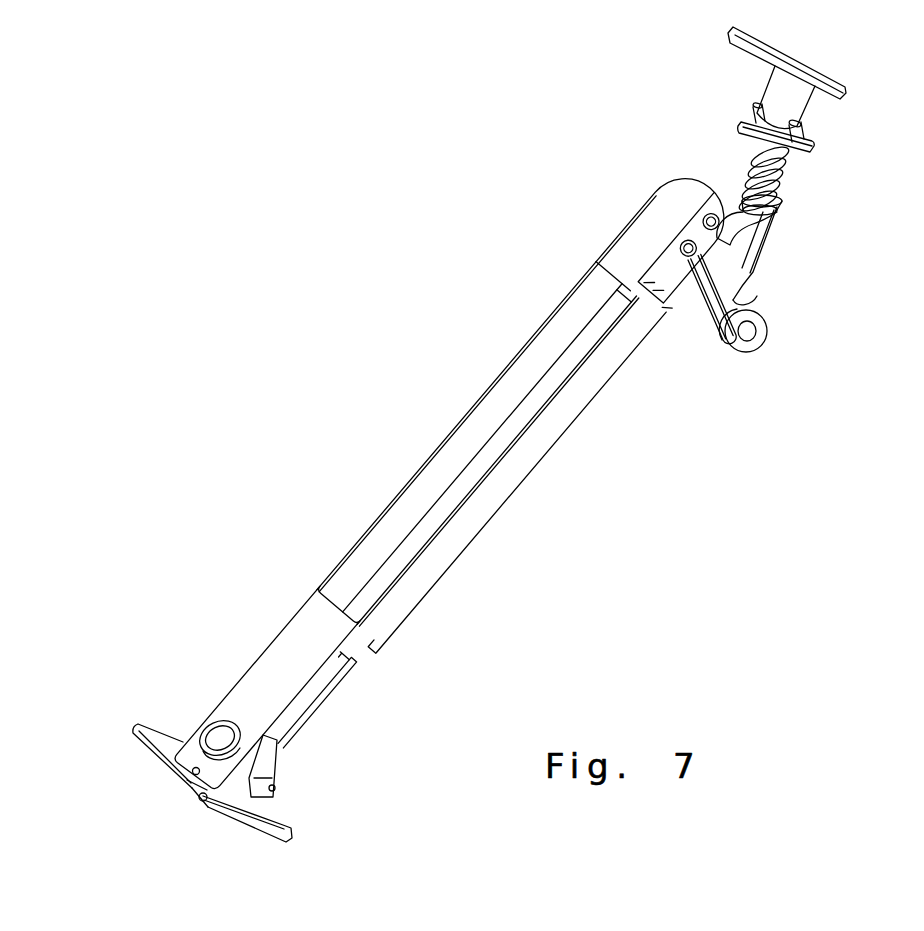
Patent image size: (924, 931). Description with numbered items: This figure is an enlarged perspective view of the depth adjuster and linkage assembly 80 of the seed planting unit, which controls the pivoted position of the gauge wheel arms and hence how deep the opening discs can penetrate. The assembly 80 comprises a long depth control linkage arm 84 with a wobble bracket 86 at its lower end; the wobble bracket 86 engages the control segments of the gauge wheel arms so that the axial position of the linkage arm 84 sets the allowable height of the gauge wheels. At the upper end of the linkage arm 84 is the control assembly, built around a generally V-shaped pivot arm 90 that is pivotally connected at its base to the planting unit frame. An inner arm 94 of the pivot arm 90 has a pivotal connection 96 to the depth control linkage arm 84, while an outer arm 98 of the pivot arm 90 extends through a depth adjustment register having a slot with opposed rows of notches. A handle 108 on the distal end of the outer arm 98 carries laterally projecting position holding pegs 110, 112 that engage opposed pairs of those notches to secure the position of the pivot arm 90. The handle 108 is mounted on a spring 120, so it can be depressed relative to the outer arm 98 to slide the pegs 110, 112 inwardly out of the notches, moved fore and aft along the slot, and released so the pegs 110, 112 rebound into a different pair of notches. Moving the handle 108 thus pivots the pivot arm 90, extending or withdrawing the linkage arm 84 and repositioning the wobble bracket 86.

The depth adjuster and linkage assembly 80 is at (443, 371).
The depth control linkage arm 84 is at (433, 472).
The wobble bracket 86 is at (160, 737).
The pivot arm 90 is at (727, 376).
The inner arm 94 is at (700, 297).
The pivotal connection 96 is at (678, 188).
The outer arm 98 is at (778, 238).
The handle 108 is at (797, 101).
The position holding peg 110 is at (807, 133).
The position holding peg 112 is at (753, 106).
The spring 120 is at (787, 173).